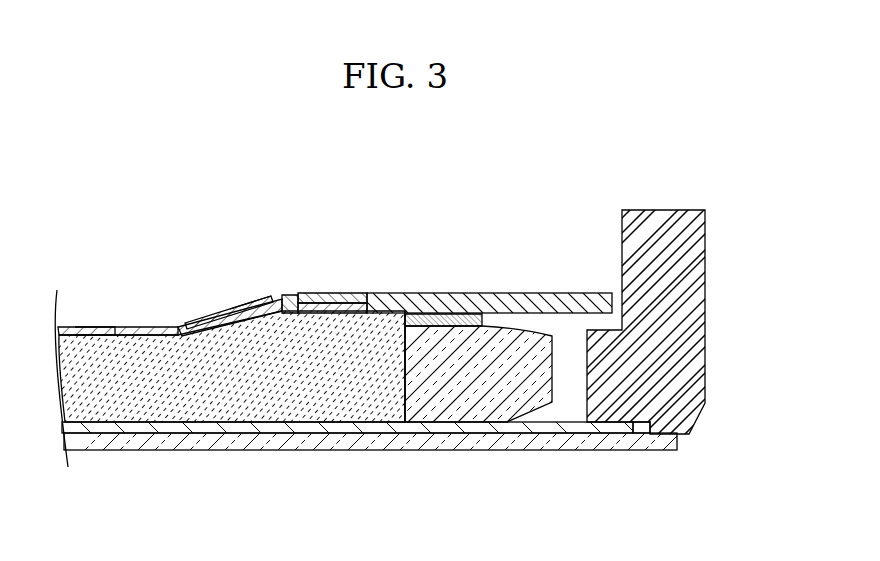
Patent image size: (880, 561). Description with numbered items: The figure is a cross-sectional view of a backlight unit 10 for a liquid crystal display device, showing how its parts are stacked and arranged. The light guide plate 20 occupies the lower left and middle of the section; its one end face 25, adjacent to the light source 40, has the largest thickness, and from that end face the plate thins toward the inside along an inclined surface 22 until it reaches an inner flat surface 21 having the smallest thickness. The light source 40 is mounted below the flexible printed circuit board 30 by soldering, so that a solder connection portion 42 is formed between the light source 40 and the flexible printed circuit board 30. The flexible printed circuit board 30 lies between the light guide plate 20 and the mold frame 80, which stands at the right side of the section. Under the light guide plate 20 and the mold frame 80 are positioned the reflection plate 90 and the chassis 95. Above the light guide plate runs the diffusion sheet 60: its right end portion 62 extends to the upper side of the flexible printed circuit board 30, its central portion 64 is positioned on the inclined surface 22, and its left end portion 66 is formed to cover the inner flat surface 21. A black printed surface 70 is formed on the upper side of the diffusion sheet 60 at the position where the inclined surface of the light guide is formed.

The backlight unit 10 is at (537, 213).
The light guide plate 20 is at (358, 407).
The inner flat surface 21 is at (133, 327).
The inclined surface 22 is at (232, 327).
The end face 25 is at (407, 347).
The flexible printed circuit board 30 is at (560, 293).
The light source 40 is at (452, 402).
The solder connection portion 42 is at (463, 318).
The diffusion sheet 60 is at (290, 292).
The right end portion 62 is at (343, 293).
The central portion 64 is at (204, 319).
The left end portion 66 is at (93, 327).
The black printed surface 70 is at (256, 302).
The mold frame 80 is at (695, 292).
The reflection plate 90 is at (607, 442).
The chassis 95 is at (528, 433).